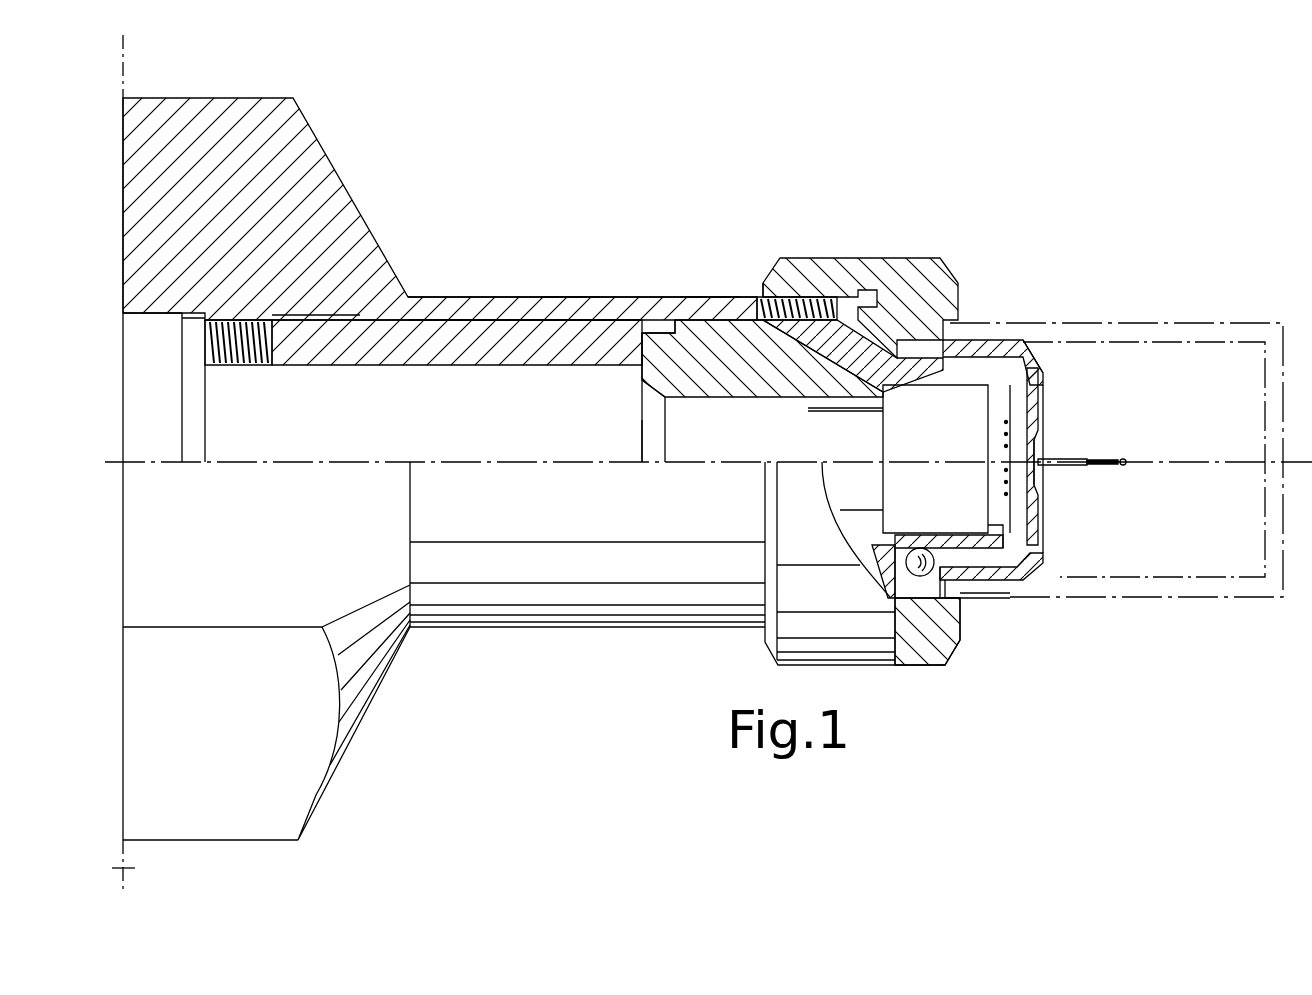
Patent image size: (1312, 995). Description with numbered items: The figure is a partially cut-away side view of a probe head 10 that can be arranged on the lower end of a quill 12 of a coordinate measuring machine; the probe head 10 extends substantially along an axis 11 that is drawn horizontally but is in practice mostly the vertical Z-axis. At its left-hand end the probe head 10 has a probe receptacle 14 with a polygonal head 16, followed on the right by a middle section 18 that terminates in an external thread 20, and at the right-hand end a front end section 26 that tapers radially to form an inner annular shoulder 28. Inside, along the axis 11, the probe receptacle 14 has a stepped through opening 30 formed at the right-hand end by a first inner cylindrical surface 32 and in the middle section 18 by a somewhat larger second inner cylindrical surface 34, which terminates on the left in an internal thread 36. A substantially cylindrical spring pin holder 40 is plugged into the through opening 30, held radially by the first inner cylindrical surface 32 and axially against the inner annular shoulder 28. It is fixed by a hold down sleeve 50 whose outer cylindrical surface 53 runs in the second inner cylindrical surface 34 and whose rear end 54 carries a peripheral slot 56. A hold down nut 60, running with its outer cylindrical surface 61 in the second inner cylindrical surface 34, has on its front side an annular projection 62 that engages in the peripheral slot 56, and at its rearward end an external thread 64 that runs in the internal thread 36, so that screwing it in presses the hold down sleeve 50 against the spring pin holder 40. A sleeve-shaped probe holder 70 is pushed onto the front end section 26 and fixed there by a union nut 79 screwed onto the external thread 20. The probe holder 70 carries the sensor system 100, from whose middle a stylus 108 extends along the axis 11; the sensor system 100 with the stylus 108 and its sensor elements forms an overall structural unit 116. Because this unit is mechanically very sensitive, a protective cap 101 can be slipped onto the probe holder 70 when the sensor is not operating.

The probe head 10 is at (1065, 138).
The axis 11 is at (1197, 458).
The quill of a coordinate measuring machine 12 is at (128, 866).
The probe receptacle 14 is at (334, 150).
The polygonal head 16 is at (290, 797).
The middle section 18 is at (590, 312).
The external thread 20 is at (760, 300).
The front end section 26 is at (975, 360).
The inner annular shoulder 28 is at (1055, 345).
The stepped through opening 30 is at (485, 433).
The first inner cylindrical surface 32 is at (902, 385).
The second inner cylindrical surface 34 is at (512, 322).
The internal thread 36 is at (343, 312).
The spring pin holder 40 is at (878, 433).
The hold down sleeve 50 is at (752, 402).
The outer cylindrical surface 53 is at (702, 312).
The rear end 54 is at (640, 440).
The peripheral slot 56 is at (675, 340).
The hold down nut 60 is at (361, 370).
The outer cylindrical surface 61 is at (560, 315).
The annular projection 62 is at (655, 328).
The external thread 64 is at (246, 350).
The probe holder 70 is at (1021, 330).
The union nut 79 is at (848, 257).
The sensor system 100 is at (1040, 432).
The protective cap 101 is at (1212, 330).
The stylus 108 is at (1083, 458).
The overall structural unit 116 is at (1068, 483).